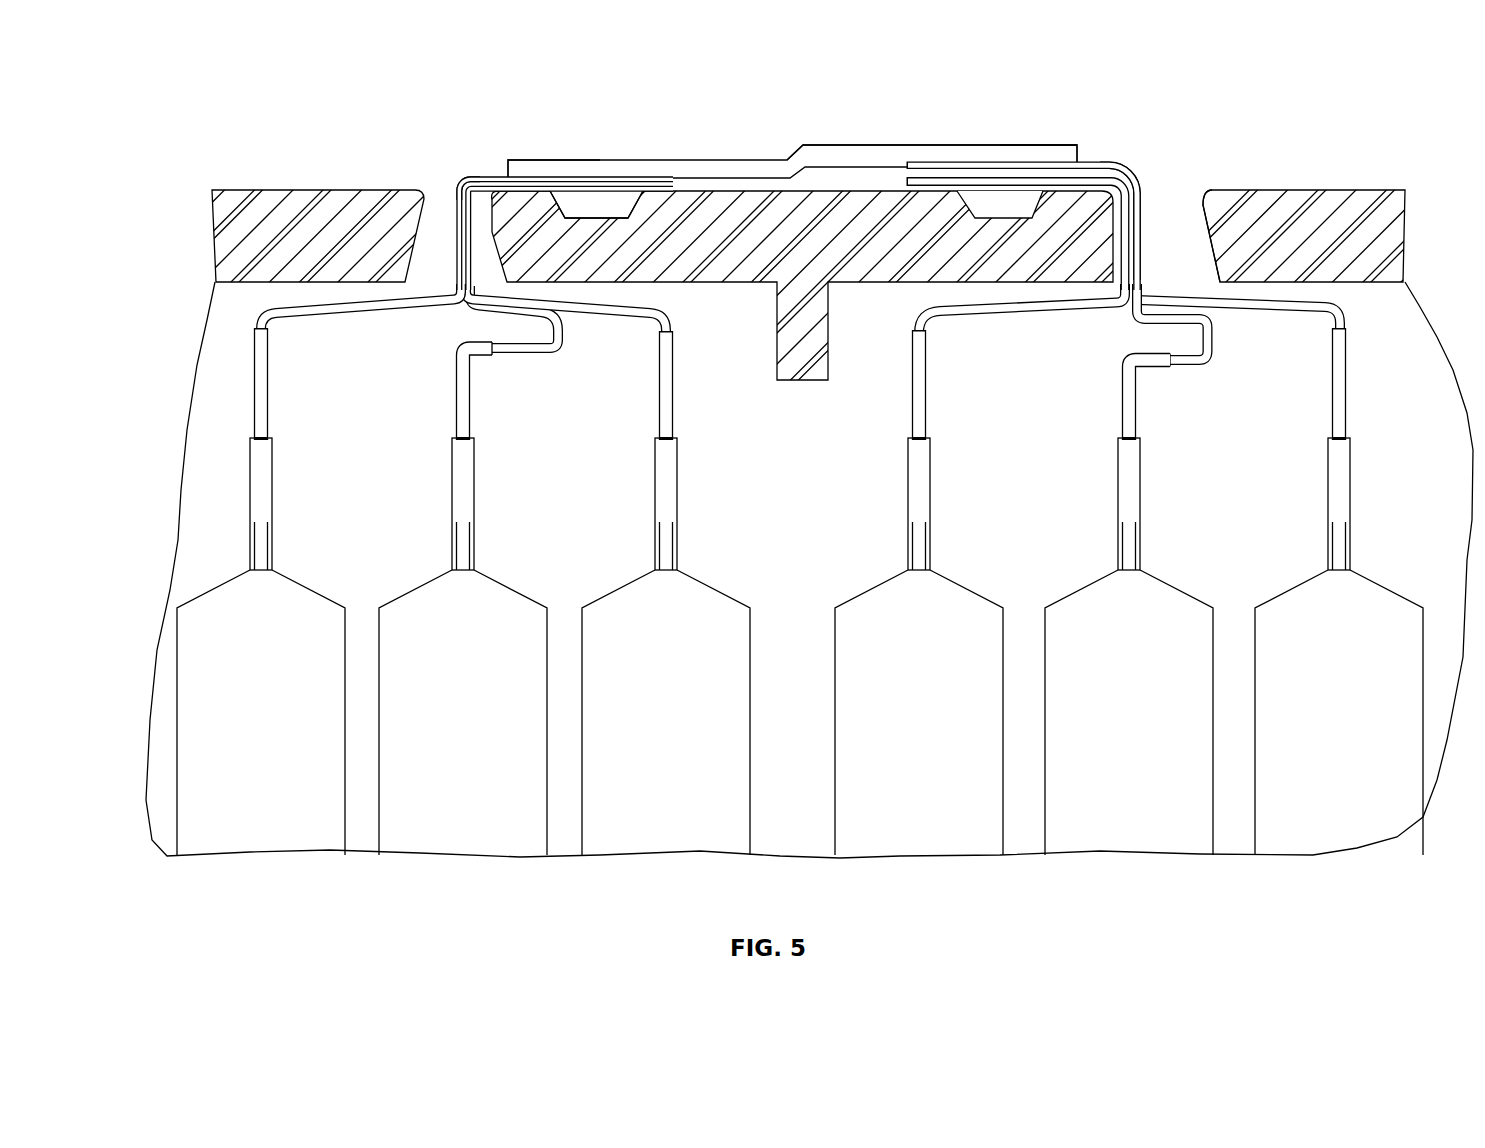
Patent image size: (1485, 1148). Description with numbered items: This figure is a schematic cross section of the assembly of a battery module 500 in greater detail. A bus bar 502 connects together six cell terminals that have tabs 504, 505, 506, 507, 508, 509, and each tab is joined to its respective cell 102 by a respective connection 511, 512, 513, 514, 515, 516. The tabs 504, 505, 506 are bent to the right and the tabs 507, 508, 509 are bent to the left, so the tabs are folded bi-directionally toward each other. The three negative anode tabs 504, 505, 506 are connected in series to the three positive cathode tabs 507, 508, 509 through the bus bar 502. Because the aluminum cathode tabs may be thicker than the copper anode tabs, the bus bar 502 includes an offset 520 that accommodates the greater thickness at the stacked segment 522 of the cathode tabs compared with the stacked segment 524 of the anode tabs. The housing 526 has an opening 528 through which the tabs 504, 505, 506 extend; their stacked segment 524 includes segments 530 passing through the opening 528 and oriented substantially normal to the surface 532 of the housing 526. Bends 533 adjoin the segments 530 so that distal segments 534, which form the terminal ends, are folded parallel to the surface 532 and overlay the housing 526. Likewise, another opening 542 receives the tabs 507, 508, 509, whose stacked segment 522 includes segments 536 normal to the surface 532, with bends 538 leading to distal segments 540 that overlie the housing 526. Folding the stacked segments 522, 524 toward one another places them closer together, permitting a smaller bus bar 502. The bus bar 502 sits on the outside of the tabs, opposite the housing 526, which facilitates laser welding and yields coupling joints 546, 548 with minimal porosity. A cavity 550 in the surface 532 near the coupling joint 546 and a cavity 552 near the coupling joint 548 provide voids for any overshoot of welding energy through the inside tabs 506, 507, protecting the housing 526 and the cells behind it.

The cell 102 is at (484, 800).
The battery module 500 is at (1108, 70).
The bus bar 502 is at (832, 140).
The tab 504 is at (262, 312).
The tab 505 is at (471, 305).
The tab 506 is at (612, 311).
The tab 507 is at (1000, 306).
The tab 508 is at (1211, 343).
The tab 509 is at (1350, 309).
The connection 511 is at (246, 511).
The connection 512 is at (452, 501).
The connection 513 is at (656, 501).
The connection 514 is at (909, 501).
The connection 515 is at (1119, 501).
The connection 516 is at (1329, 501).
The offset 520 is at (799, 152).
The stacked segment 522 is at (1084, 182).
The stacked segment 524 is at (531, 168).
The housing 526 is at (1325, 202).
The opening 528 is at (421, 213).
The segment 530 is at (456, 222).
The surface 532 is at (296, 205).
The bend 533 is at (468, 180).
The distal segment 534 is at (625, 186).
The segment 536 is at (1129, 252).
The bend 538 is at (1131, 158).
The distal segment 540 is at (910, 165).
The opening 542 is at (1200, 212).
The coupling joint 546 is at (1090, 166).
The coupling joint 548 is at (577, 168).
The cavity 550 is at (968, 203).
The cavity 552 is at (628, 207).